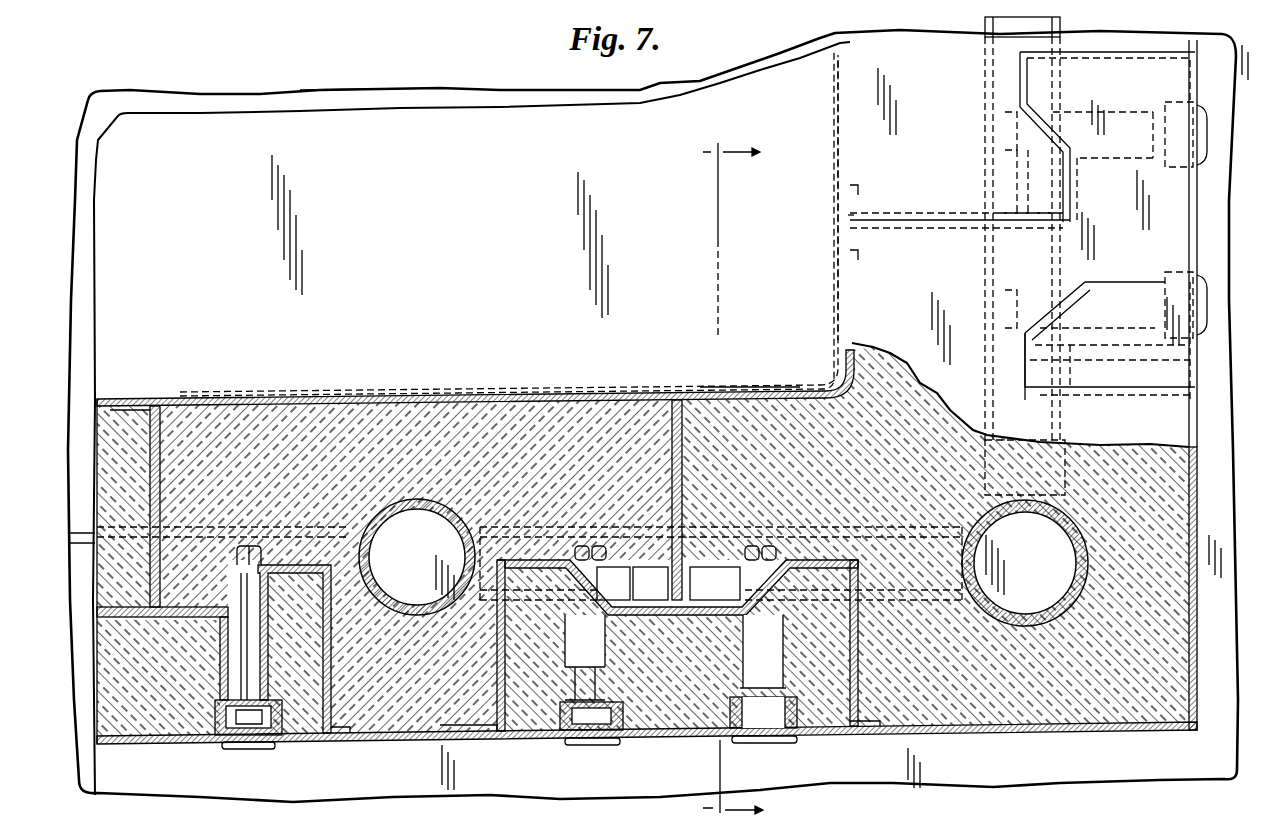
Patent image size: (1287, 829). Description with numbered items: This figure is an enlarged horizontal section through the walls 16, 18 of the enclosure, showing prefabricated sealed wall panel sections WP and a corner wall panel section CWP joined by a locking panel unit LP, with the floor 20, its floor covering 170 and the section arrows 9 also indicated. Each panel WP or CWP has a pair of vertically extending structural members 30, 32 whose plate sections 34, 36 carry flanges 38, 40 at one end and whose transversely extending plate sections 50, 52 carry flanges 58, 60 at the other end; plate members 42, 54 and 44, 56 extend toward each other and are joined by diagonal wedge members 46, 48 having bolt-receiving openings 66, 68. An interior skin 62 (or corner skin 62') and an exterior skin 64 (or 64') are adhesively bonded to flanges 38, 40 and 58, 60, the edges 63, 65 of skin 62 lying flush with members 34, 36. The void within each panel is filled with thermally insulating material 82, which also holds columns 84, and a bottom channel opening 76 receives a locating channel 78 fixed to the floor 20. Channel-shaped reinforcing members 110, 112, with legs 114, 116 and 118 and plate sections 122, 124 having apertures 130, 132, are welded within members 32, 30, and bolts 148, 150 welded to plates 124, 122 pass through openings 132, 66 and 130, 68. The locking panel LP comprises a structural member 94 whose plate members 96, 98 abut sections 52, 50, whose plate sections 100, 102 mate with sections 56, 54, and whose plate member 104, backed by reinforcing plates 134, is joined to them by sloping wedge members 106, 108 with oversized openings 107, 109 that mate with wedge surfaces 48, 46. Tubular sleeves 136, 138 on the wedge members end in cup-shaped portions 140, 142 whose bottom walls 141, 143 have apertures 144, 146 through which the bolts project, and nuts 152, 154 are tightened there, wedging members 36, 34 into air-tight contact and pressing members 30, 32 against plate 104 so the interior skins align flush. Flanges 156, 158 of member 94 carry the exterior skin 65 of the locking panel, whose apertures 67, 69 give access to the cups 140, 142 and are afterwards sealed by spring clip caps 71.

The wall 16 is at (1236, 448).
The wall 18 is at (1012, 738).
The floor 20 is at (190, 94).
The structural member 30 is at (945, 218).
The structural member 32 is at (944, 232).
The plate section 34 is at (906, 218).
The plate section 36 is at (906, 230).
The flange 38 is at (860, 190).
The flange 40 is at (860, 256).
The plate member 42 is at (1060, 206).
The plate section 44 is at (1058, 256).
The wedge surface providing member 46 is at (1050, 194).
The wedge surface providing member 48 is at (1060, 300).
The plate section 50 is at (900, 48).
The plate section 52 is at (1130, 390).
The plate member 54 is at (1020, 80).
The plate section 56 is at (1027, 372).
The flange 58 is at (1190, 45).
The flange 60 is at (1186, 415).
The interior skin member 62 is at (469, 228).
The interior corner skin 62' is at (750, 377).
The edge of skin 63 is at (848, 218).
The exterior skin member 64 is at (257, 757).
The exterior corner skin 64' is at (1131, 744).
The locking panel skin 65 is at (848, 230).
The bolt-receiving opening 66 is at (226, 594).
The aperture 67 is at (566, 746).
The bolt-receiving opening 68 is at (625, 616).
The aperture 69 is at (224, 746).
The spring clip cap 71 is at (1206, 128).
The opening 76 is at (988, 82).
The locating channel 78 is at (984, 28).
The thermally insulating material 82 is at (103, 476).
The column 84 is at (428, 522).
The structural member 94 is at (322, 669).
The plate member 96 is at (1130, 386).
The plate member 98 is at (1110, 110).
The plate section 100 is at (1050, 372).
The plate section 102 is at (1030, 100).
The plate member 104 is at (1080, 244).
The sloping wedge plate member 106 is at (1052, 320).
The bolt-receiving opening 107 is at (595, 616).
The sloping wedge plate member 108 is at (1056, 126).
The bolt-receiving opening 109 is at (268, 615).
The channel-shaped reinforcing member 110 is at (1008, 273).
The channel-shaped reinforcing member 112 is at (1008, 184).
The leg 114 is at (367, 618).
The leg 116 is at (409, 617).
The leg 118 is at (712, 583).
The plate section 122 is at (640, 544).
The plate section 124 is at (725, 564).
The bolt-receiving aperture 130 is at (560, 544).
The bolt-receiving aperture 132 is at (795, 540).
The reinforcing plate 134 is at (1080, 196).
The tubular bolt-receiving sleeve 136 is at (1120, 285).
The tubular bolt-receiving sleeve 138 is at (1120, 160).
The cup-shaped portion 140 is at (1180, 270).
The bottom wall 141 is at (612, 696).
The cup-shaped portion 142 is at (1180, 170).
The bottom wall 143 is at (272, 746).
The bolt-receiving aperture 144 is at (564, 681).
The bolt-receiving aperture 146 is at (220, 698).
The bolt member 148 is at (1000, 130).
The bolt member 150 is at (1008, 302).
The nut 152 is at (246, 750).
The nut 154 is at (564, 700).
The flange 156 is at (1180, 385).
The flange 158 is at (1185, 100).
The floor covering 170 is at (348, 92).
The section line 9- 9 is at (725, 479).
The wall panel section WP is at (846, 112).
The locking panel unit LP is at (1200, 201).
The corner wall panel section CWP is at (848, 323).